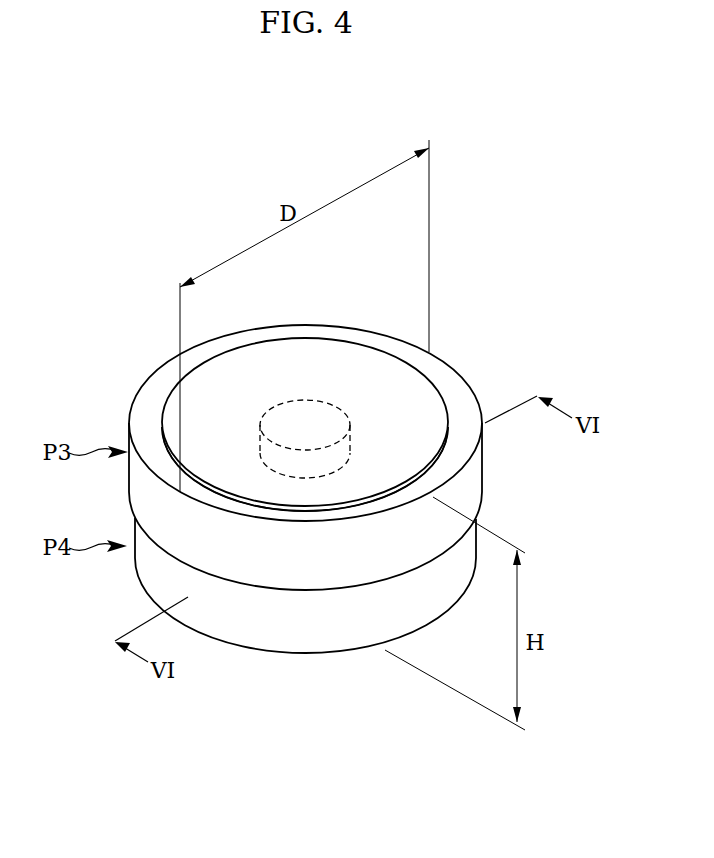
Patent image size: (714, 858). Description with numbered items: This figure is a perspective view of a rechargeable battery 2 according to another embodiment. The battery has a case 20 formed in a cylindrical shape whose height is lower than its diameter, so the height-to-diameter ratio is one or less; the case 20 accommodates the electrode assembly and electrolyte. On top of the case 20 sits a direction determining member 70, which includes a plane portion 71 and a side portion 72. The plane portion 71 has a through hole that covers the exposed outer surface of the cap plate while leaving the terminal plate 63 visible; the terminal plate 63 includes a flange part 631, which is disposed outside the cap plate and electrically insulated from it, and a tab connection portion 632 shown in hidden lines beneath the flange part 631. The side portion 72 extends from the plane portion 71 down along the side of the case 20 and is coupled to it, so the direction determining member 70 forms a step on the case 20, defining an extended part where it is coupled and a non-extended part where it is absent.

The rechargeable battery 2 is at (315, 167).
The case 20 is at (297, 647).
The terminal plate 63 is at (388, 267).
The flange part 631 is at (367, 360).
The tab connection portion 632 is at (306, 407).
The direction determining member 70 is at (533, 442).
The plane portion 71 is at (465, 447).
The side portion 72 is at (468, 487).